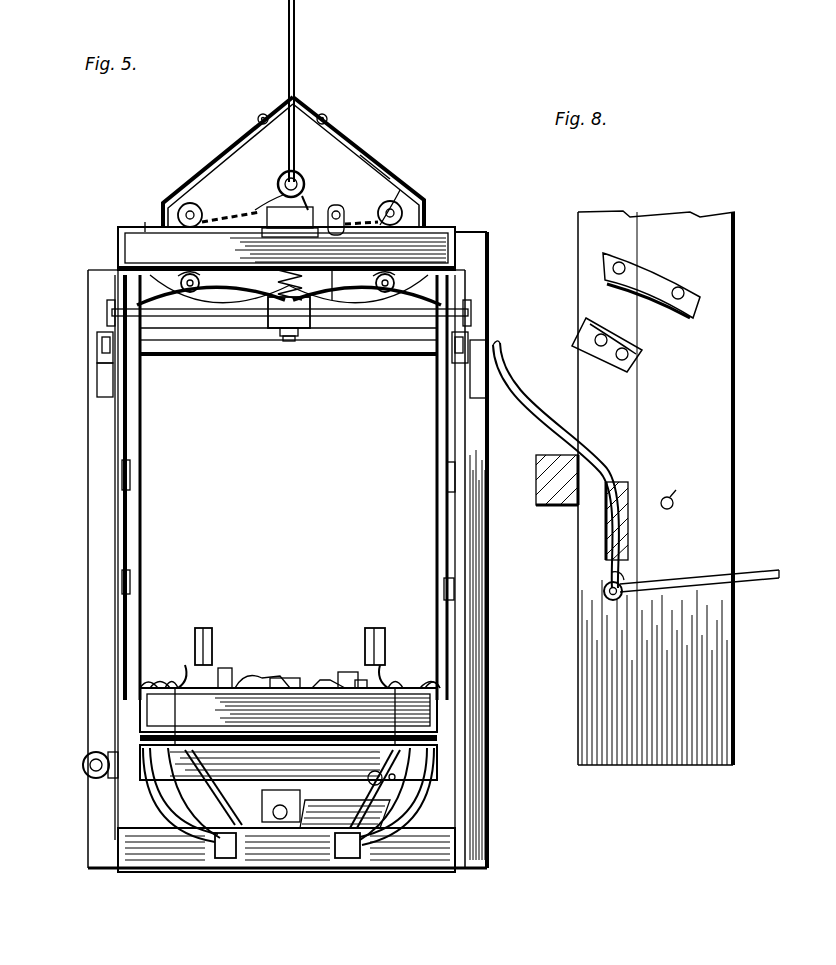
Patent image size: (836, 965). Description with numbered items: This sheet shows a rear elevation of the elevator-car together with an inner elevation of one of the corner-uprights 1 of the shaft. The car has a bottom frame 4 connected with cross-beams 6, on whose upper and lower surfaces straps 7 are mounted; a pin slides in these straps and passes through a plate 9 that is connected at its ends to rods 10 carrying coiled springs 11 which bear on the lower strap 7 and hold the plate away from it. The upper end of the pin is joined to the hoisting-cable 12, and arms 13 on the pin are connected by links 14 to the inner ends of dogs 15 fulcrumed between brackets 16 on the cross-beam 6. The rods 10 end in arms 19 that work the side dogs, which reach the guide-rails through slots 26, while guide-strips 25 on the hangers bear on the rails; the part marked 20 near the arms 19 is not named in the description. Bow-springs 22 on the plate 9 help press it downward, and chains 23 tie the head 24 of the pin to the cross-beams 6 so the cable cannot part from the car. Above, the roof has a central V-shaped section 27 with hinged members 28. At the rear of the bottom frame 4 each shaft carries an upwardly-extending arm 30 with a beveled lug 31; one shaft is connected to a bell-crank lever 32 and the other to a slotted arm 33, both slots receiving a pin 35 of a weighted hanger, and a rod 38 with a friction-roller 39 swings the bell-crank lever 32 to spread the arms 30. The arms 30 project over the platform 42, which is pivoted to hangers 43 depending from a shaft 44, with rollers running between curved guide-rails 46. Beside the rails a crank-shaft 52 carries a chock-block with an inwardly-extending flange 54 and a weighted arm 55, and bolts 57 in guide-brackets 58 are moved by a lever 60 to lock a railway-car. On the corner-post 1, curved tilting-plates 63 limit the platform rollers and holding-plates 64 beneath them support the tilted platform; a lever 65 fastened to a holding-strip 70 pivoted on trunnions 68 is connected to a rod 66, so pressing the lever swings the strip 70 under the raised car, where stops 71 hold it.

In FIG. 5, the corner-uprights 1 is at (529, 734).
In FIG. 5, the bottom frame 4 is at (150, 858).
In FIG. 5, the cross-beams 6 is at (142, 225).
In FIG. 5, the straps 7 is at (305, 206).
In FIG. 5, the plate 9 is at (305, 318).
In FIG. 5, the rods 10 is at (288, 327).
In FIG. 5, the coiled springs 11 is at (268, 310).
In FIG. 5, the hoisting-cable 12 is at (296, 60).
In FIG. 5, the arms 13 is at (336, 205).
In FIG. 5, the links 14 is at (235, 240).
In FIG. 5, the dogs 15 is at (150, 290).
In FIG. 5, the brackets 16 is at (197, 288).
In FIG. 5, the arms 19 is at (107, 318).
In FIG. 5, the bolt 20 is at (97, 350).
In FIG. 5, the bow-springs 22 is at (345, 308).
In FIG. 5, the chains 23 is at (222, 212).
In FIG. 5, the head 24 is at (300, 176).
In FIG. 5, the guide-strips 25 is at (88, 478).
In FIG. 5, the slots 26 is at (97, 380).
In FIG. 5, the central V-shaped section 27 is at (300, 104).
In FIG. 5, the members 28 is at (375, 156).
In FIG. 5, the arm 30 is at (135, 795).
In FIG. 5, the lug 31 is at (140, 686).
In FIG. 5, the bell-crank lever 32 is at (325, 810).
In FIG. 5, the slotted arm 33 is at (222, 812).
In FIG. 5, the pin 35 is at (280, 820).
In FIG. 5, the rod 38 is at (288, 765).
In FIG. 5, the friction-roller 39 is at (82, 765).
In FIG. 5, the platform 42 is at (155, 712).
In FIG. 5, the hangers 43 is at (142, 521).
In FIG. 5, the shaft 44 is at (300, 360).
In FIG. 5, the curved guide-rails 46 is at (130, 604).
In FIG. 5, the crank-shaft 52 is at (183, 670).
In FIG. 5, the flange 54 is at (205, 630).
In FIG. 5, the weighted arm 55 is at (190, 855).
In FIG. 5, the bolts 57 is at (320, 676).
In FIG. 5, the guide-brackets 58 is at (225, 668).
In FIG. 5, the lever 60 is at (250, 676).
In FIG. 8, the tilting-plates 63 is at (650, 262).
In FIG. 8, the holding-plates 64 is at (635, 345).
In FIG. 5, the lever 65 is at (552, 385).
In FIG. 8, the rod 66 is at (755, 585).
In FIG. 8, the trunnions 68 is at (630, 575).
In FIG. 8, the holding-strip 70 is at (630, 495).
In FIG. 8, the stops 71 is at (681, 491).